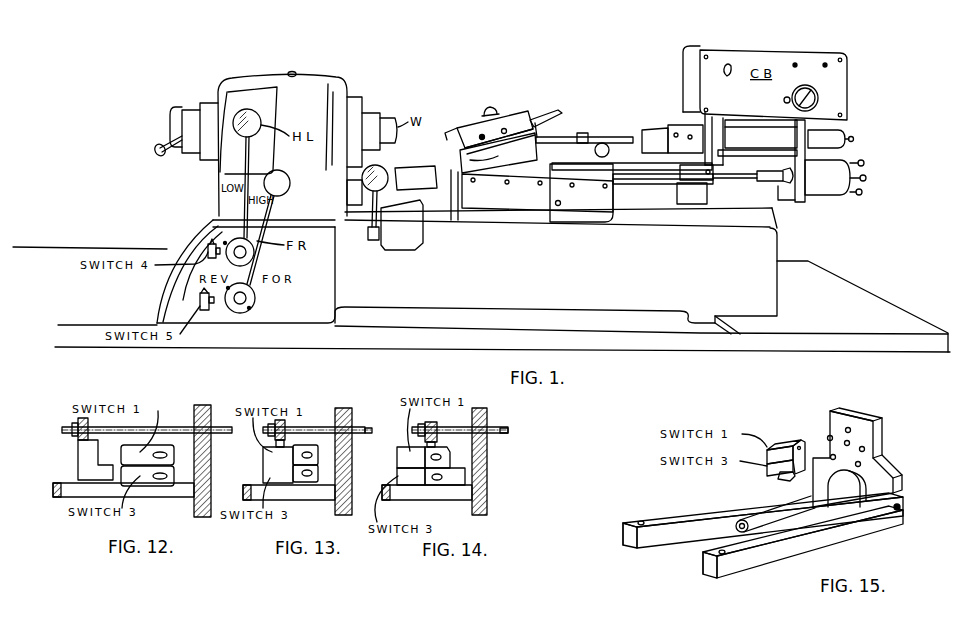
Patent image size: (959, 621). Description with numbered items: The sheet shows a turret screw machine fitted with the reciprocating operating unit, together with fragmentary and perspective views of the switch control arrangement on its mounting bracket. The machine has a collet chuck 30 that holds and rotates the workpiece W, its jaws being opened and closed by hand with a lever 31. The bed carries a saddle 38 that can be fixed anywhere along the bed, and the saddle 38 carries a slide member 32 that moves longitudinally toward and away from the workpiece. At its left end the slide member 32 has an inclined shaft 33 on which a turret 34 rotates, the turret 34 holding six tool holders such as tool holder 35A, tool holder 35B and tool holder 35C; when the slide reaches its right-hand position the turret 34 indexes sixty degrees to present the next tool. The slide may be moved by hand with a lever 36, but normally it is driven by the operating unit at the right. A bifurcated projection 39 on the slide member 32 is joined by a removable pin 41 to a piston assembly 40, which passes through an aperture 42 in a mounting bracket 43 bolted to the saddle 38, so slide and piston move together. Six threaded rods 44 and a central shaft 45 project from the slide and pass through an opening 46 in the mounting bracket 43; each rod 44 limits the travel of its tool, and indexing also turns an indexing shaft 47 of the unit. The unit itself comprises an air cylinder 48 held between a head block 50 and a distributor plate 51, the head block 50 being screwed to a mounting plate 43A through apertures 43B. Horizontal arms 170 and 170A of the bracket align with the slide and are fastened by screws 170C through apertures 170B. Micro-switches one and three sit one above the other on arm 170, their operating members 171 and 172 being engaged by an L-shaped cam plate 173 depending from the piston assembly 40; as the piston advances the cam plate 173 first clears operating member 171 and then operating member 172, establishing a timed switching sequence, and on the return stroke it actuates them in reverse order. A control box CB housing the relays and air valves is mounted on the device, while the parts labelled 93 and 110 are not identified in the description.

In FIG. 1, the collet chuck 30 is at (388, 123).
In FIG. 1, the lever 31 is at (163, 141).
In FIG. 1, the slide member 32 is at (503, 170).
In FIG. 1, the inclined shaft 33 is at (490, 111).
In FIG. 1, the turret 34 is at (509, 117).
In FIG. 1, the tool holder 35A is at (468, 130).
In FIG. 1, the tool holder 35B is at (463, 148).
In FIG. 1, the tool holder 35C is at (508, 130).
In FIG. 1, the lever 36 is at (600, 136).
In FIG. 1, the saddle 38 is at (537, 193).
In FIG. 1, the bifurcated projection 39 is at (662, 130).
In FIG. 1, the piston assembly 40 is at (650, 100).
In FIG. 12, the piston assembly 40 is at (50, 429).
In FIG. 13, the piston assembly 40 is at (309, 403).
In FIG. 14, the piston assembly 40 is at (473, 394).
In FIG. 1, the removable pin 41 is at (677, 128).
In FIG. 15, the aperture 42 is at (828, 436).
In FIG. 1, the mounting bracket 43 is at (692, 193).
In FIG. 12, the mounting bracket 43 is at (210, 418).
In FIG. 13, the mounting bracket 43 is at (347, 408).
In FIG. 14, the mounting bracket 43 is at (474, 410).
In FIG. 15, the mounting bracket 43 is at (883, 470).
In FIG. 15, the mounting plate 43A is at (878, 420).
In FIG. 15, the apertures 43B is at (850, 429).
In FIG. 1, the threaded rods 44 is at (735, 182).
In FIG. 1, the central shaft 45 is at (761, 188).
In FIG. 15, the opening 46 is at (851, 494).
In FIG. 1, the indexing shaft 47 is at (771, 181).
In FIG. 1, the air cylinder 48 is at (757, 138).
In FIG. 1, the head block 50 is at (722, 125).
In FIG. 1, the distributor plate 51 is at (803, 196).
In FIG. 1, the relay 93 is at (831, 139).
In FIG. 1, the solenoid valve 110 is at (835, 177).
In FIG. 14, the arm 170 is at (425, 494).
In FIG. 15, the arm 170 is at (677, 520).
In FIG. 1, the horizontal arm 170A is at (656, 174).
In FIG. 15, the horizontal arm 170A is at (750, 558).
In FIG. 15, the apertures 170B is at (626, 524).
In FIG. 1, the screws 170C is at (560, 170).
In FIG. 13, the operating member 171 is at (307, 452).
In FIG. 15, the operating member 171 is at (800, 442).
In FIG. 13, the operating member 172 is at (308, 481).
In FIG. 15, the operating member 172 is at (793, 475).
In FIG. 12, the cam plate 173 is at (90, 457).
In FIG. 13, the cam plate 173 is at (290, 462).
In FIG. 14, the cam plate 173 is at (457, 474).